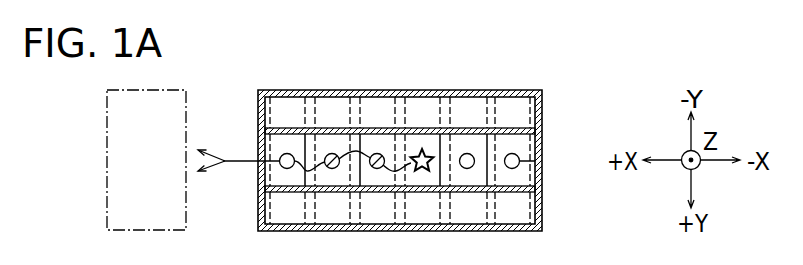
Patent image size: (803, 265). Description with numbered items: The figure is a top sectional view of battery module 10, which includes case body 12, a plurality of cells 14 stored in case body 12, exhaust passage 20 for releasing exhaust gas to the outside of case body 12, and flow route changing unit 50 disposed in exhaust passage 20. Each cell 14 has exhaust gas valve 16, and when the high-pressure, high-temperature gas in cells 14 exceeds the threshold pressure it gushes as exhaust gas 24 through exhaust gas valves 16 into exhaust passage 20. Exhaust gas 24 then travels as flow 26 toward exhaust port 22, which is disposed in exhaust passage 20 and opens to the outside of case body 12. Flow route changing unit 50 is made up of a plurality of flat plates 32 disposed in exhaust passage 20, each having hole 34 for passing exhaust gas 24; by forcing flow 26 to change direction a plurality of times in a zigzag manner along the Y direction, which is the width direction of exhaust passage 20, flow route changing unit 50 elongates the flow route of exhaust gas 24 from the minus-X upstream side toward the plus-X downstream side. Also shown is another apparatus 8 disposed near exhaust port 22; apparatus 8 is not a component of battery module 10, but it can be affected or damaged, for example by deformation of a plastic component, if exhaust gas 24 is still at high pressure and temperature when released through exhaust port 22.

The apparatus 8 is at (158, 176).
The battery module 10 is at (258, 73).
The case body 12 is at (527, 89).
The cell 14 is at (512, 87).
The exhaust gas valve 16 is at (540, 167).
The exhaust passage 20 is at (520, 147).
The exhaust port 22 is at (258, 165).
The exhaust gas 24 is at (428, 151).
The flow 26 is at (343, 152).
The flat plate 32 is at (467, 103).
The hole 34 is at (305, 172).
The flow route changing unit 50 is at (487, 152).